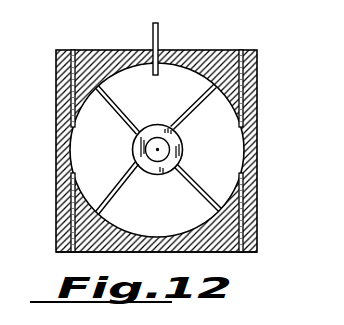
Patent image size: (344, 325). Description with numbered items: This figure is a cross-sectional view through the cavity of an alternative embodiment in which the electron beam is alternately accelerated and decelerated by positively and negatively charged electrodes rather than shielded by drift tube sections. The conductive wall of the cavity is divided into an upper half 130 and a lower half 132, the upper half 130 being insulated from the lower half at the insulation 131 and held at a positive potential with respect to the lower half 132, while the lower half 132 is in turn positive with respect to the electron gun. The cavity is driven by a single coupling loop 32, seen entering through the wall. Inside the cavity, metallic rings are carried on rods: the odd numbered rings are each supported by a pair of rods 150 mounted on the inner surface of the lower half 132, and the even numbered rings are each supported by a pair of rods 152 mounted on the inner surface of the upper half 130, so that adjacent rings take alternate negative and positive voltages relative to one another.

The coupling loop 32 is at (153, 36).
The upper half of the cavity wall 130 is at (201, 50).
The insulation 131 is at (73, 50).
The lower half of the cavity wall 132 is at (257, 252).
The rods 150 is at (199, 193).
The rods 152 is at (197, 104).